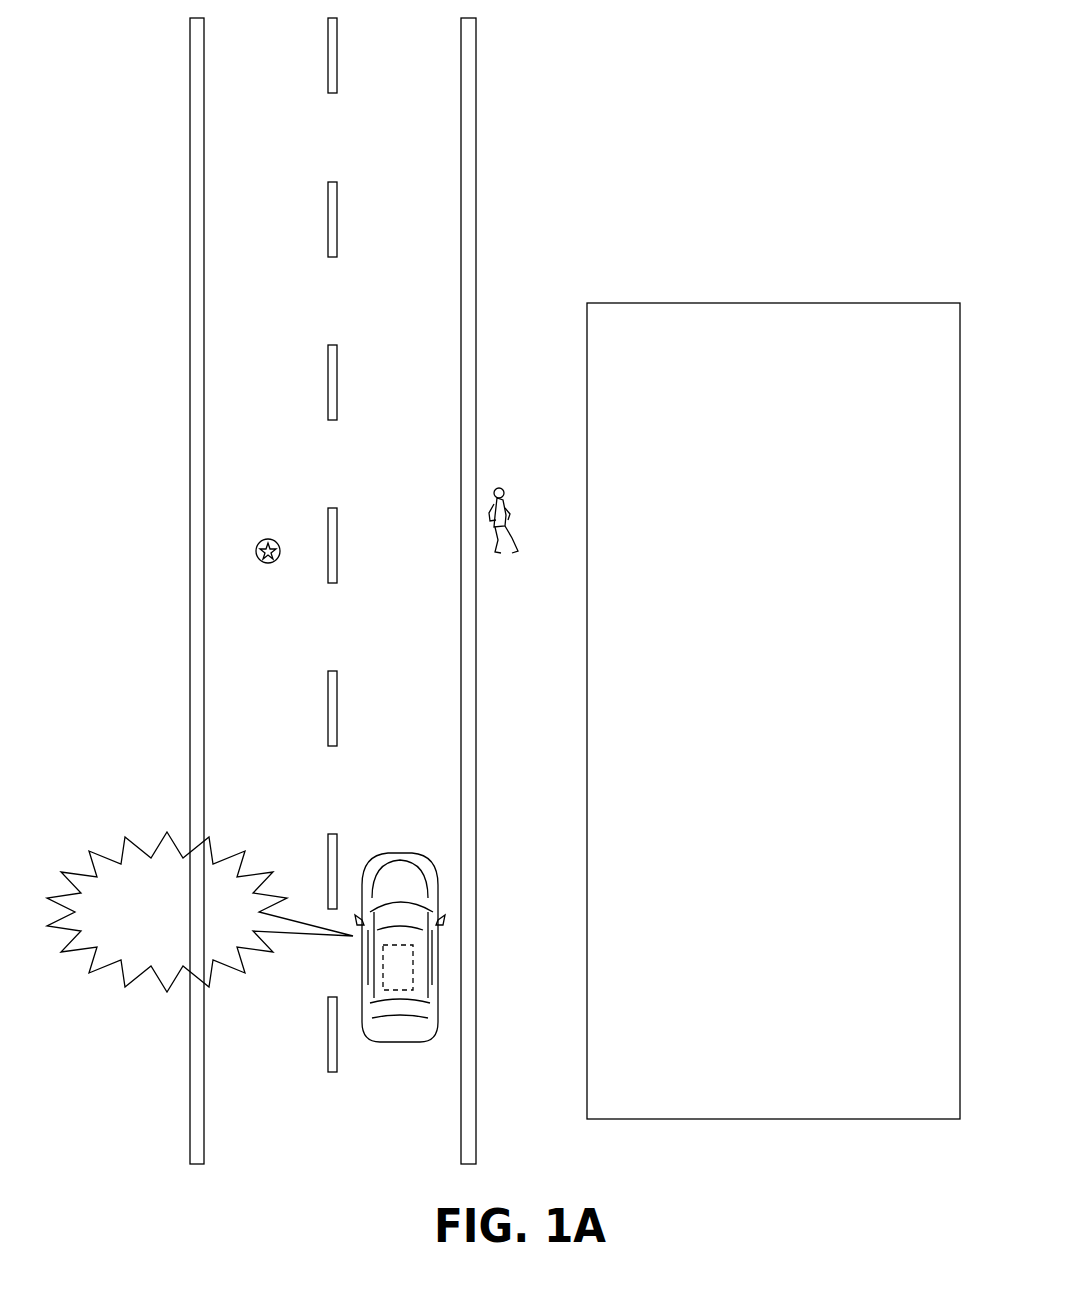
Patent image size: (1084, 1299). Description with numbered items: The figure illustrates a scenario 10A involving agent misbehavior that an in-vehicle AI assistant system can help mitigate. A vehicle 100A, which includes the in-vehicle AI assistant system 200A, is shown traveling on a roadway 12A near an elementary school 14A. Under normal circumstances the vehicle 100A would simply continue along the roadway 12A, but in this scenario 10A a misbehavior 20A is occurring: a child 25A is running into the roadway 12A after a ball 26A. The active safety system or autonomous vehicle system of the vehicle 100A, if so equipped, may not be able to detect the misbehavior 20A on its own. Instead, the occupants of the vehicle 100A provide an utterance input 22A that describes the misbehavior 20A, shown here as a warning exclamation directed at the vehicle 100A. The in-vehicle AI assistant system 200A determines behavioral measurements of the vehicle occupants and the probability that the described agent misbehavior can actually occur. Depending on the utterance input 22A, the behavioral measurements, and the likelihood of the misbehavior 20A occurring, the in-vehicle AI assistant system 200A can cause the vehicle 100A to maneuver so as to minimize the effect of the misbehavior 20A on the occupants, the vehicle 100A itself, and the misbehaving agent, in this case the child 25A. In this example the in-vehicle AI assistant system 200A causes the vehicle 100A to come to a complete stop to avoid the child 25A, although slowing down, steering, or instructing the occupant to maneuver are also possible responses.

The scenario 10A is at (555, 163).
The roadway 12A is at (245, 484).
The elementary school 14A is at (772, 325).
The misbehavior 20A is at (508, 376).
The utterance input 22A is at (140, 846).
The child 25A is at (500, 488).
The ball 26A is at (256, 551).
The vehicle 100A is at (413, 891).
The in-vehicle AI assistant system 200A is at (418, 965).